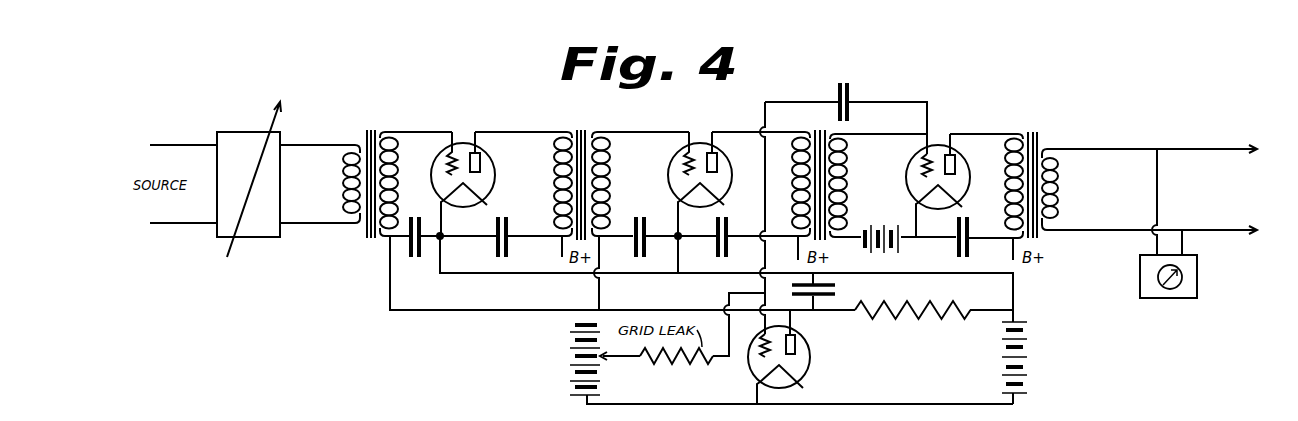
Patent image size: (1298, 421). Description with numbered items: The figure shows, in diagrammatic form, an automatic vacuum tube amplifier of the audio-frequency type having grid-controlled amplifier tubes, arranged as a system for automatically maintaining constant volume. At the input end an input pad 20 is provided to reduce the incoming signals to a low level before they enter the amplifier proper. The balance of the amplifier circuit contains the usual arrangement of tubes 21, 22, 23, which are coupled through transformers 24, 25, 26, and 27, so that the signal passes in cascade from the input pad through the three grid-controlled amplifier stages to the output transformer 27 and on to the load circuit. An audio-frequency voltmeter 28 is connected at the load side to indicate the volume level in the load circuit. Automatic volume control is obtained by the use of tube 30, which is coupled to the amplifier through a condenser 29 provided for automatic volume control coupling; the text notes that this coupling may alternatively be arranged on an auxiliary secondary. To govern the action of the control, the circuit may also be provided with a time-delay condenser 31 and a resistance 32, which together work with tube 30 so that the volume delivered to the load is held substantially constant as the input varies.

The input pad 20 is at (248, 82).
The amplifier tube 21 is at (459, 133).
The amplifier tube 22 is at (701, 137).
The amplifier tube 23 is at (935, 142).
The transformer 24 is at (375, 129).
The transformer 25 is at (587, 130).
The transformer 26 is at (819, 126).
The transformer 27 is at (1042, 141).
The audio-frequency voltmeter 28 is at (1140, 281).
The condenser 29 is at (853, 85).
The tube 30 is at (748, 374).
The time-delay condenser 31 is at (895, 223).
The resistance 32 is at (922, 320).